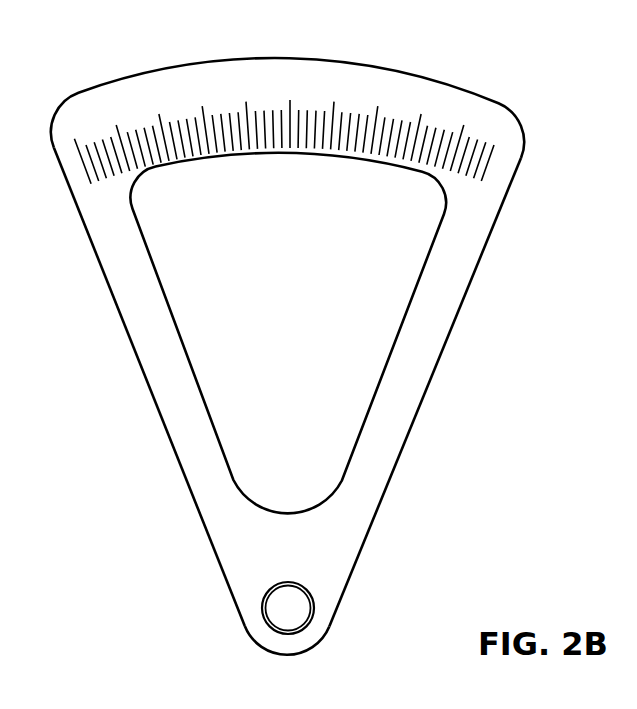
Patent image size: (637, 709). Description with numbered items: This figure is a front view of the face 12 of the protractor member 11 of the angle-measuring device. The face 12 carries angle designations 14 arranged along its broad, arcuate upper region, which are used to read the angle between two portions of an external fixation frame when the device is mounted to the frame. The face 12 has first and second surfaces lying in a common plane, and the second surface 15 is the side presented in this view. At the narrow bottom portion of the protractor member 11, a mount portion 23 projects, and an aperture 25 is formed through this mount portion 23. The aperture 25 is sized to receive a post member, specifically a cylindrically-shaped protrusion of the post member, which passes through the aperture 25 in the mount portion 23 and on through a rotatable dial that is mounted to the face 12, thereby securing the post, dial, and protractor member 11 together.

The protractor member 11 is at (417, 393).
The face 12 is at (402, 85).
The angle designations 14 is at (420, 120).
The second surface 15 is at (117, 246).
The mount portion 23 is at (328, 607).
The aperture 25 is at (285, 613).